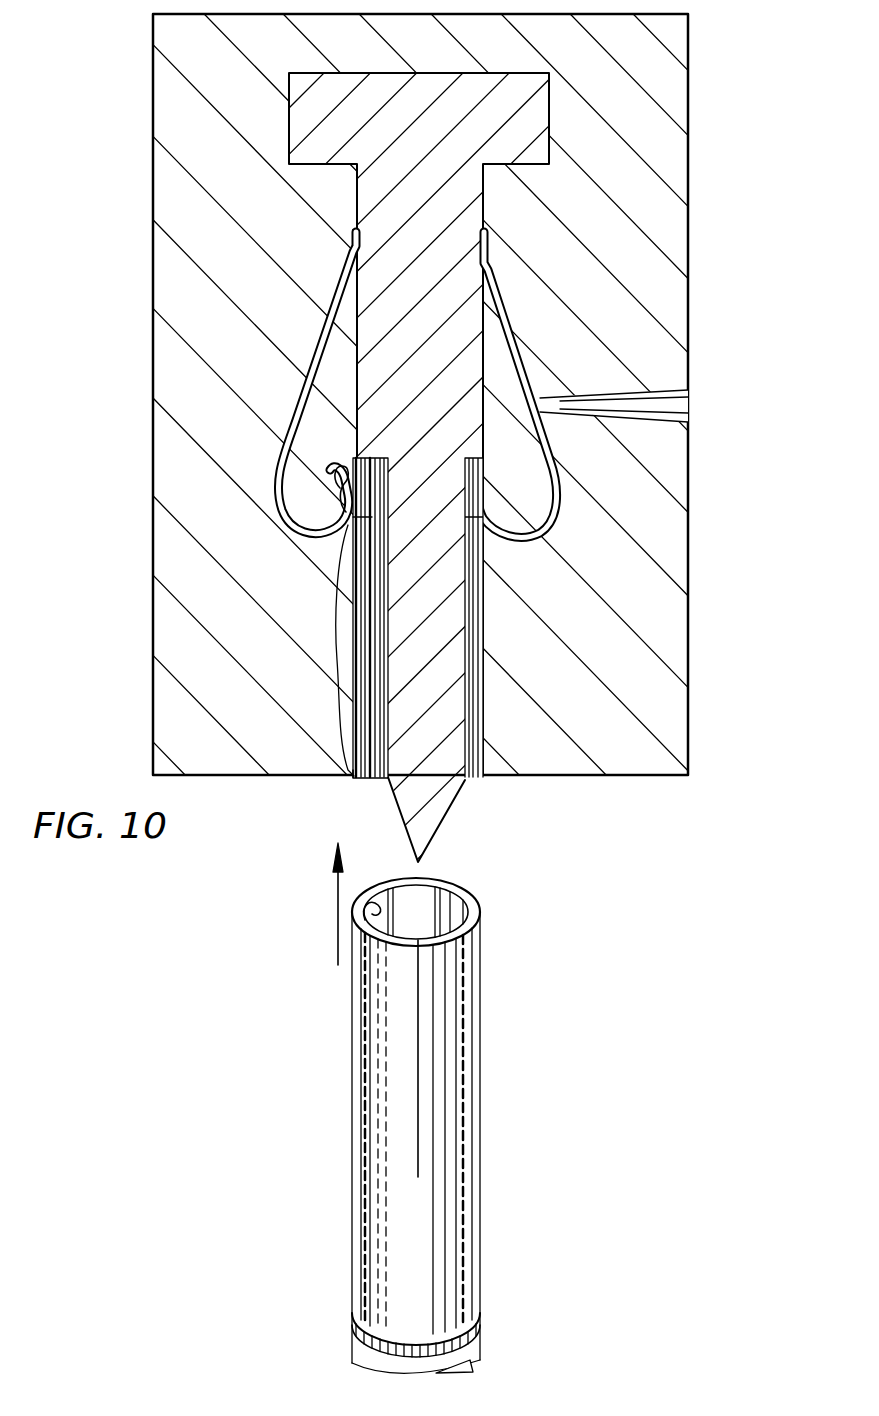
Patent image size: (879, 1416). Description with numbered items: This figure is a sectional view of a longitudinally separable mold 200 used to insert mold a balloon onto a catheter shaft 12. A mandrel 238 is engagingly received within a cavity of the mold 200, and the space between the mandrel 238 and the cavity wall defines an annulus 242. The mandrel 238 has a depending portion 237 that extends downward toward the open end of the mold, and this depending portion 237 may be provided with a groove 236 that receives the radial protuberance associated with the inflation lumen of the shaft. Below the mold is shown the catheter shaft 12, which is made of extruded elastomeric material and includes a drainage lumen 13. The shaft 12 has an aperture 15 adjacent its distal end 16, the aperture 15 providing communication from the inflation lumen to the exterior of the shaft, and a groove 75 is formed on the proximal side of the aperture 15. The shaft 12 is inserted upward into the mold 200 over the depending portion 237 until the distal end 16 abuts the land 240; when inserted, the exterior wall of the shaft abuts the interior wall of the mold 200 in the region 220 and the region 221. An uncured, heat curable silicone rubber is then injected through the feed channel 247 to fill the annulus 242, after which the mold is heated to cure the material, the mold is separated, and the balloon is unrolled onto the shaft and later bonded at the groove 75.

The longitudinally separable mold 200 is at (688, 312).
The depending portion 237 is at (453, 638).
The mandrel 238 is at (385, 200).
The annulus 242 is at (297, 395).
The land 240 is at (472, 457).
The feed channel 247 is at (690, 398).
The region 220 is at (341, 632).
The region 221 is at (337, 483).
The groove 236 is at (370, 778).
The catheter shaft 12 is at (484, 1175).
The distal end 16 is at (481, 910).
The drainage lumen 13 is at (425, 912).
The aperture 15 is at (352, 1148).
The groove 75 is at (476, 1318).